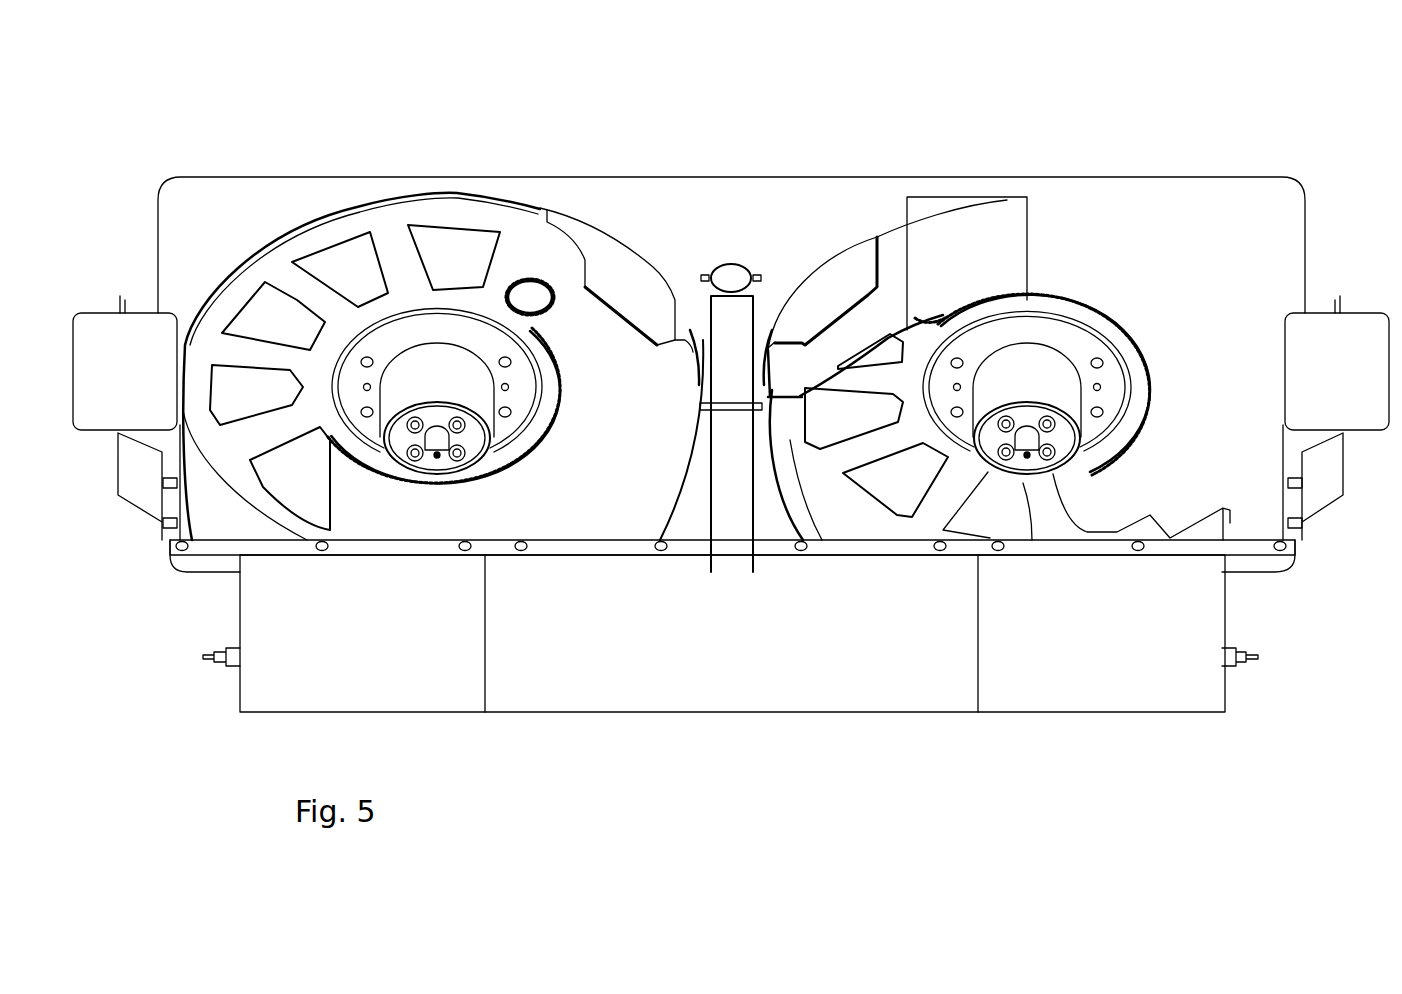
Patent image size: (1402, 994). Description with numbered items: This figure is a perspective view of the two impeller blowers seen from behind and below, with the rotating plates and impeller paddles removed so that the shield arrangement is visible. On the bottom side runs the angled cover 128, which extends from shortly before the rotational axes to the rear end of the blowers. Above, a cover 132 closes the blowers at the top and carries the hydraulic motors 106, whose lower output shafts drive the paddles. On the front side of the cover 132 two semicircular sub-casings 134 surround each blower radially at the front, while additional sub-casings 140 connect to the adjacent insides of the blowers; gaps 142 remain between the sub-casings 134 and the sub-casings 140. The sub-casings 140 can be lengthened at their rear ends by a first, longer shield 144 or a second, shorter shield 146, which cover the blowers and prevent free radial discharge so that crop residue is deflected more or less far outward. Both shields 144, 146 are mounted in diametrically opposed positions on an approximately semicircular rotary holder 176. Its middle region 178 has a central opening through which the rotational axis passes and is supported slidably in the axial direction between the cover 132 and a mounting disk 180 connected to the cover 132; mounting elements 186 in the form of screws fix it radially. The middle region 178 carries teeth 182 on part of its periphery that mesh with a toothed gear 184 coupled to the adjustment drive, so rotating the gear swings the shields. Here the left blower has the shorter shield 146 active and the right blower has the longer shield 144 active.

The hydraulic motor 106 is at (424, 370).
The angled cover 128 is at (750, 680).
The cover 132 is at (838, 175).
The sub-casing 134 is at (685, 470).
The sub-casing 140 is at (678, 330).
The gap 142 is at (770, 395).
The first shield 144 is at (962, 245).
The second shield 146 is at (622, 282).
The rotary holder 176 is at (333, 232).
The middle region 178 is at (345, 428).
The mounting disk 180 is at (465, 337).
The teeth 182 is at (508, 465).
The toothed gear 184 is at (553, 280).
The mounting element 186 is at (367, 417).